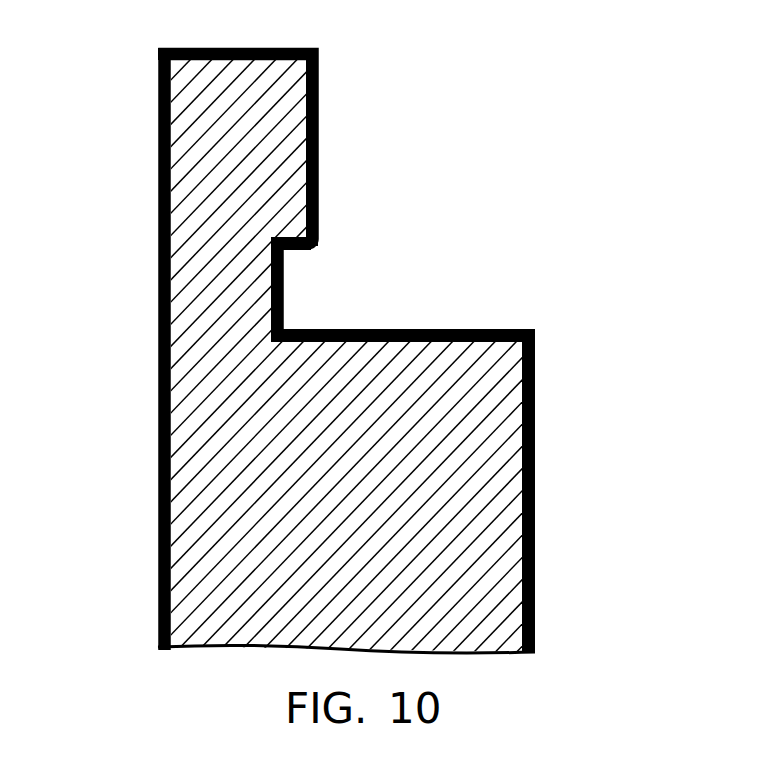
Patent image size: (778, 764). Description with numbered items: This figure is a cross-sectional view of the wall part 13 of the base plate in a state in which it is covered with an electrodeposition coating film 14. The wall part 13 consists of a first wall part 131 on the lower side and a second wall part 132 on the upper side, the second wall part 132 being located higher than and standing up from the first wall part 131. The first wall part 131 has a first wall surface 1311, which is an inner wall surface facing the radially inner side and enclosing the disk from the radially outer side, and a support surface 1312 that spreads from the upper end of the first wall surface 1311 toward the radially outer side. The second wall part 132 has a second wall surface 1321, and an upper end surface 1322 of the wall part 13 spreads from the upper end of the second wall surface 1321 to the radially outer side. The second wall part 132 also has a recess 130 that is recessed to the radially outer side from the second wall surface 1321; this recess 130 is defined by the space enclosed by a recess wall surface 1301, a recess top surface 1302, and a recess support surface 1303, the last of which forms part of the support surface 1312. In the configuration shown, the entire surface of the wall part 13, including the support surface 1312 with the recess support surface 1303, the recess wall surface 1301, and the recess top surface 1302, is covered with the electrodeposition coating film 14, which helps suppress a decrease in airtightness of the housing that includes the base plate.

The wall part 13 is at (389, 370).
The first wall part 131 is at (92, 124).
The second wall part 132 is at (178, 142).
The electrodeposition coating film 14 is at (359, 329).
The recess 130 is at (392, 255).
The recess wall surface 1301 is at (283, 292).
The recess top surface 1302 is at (318, 262).
The recess support surface 1303 is at (293, 328).
The first wall surface 1311 is at (533, 398).
The support surface 1312 is at (448, 330).
The second wall surface 1321 is at (318, 107).
The upper end surface 1322 is at (253, 48).